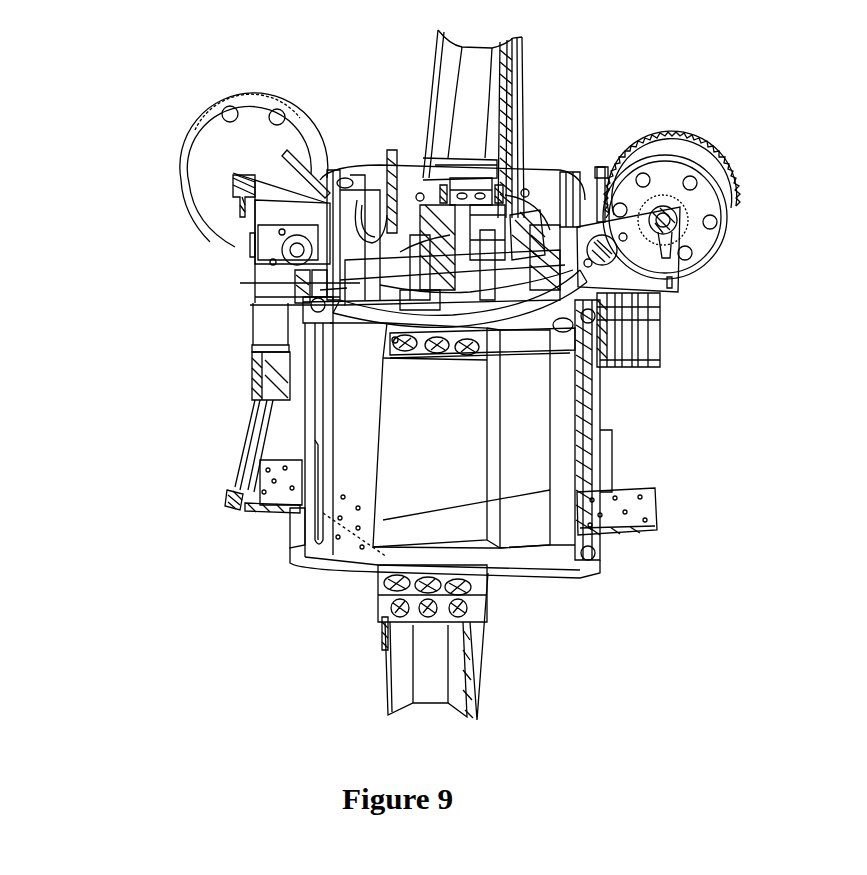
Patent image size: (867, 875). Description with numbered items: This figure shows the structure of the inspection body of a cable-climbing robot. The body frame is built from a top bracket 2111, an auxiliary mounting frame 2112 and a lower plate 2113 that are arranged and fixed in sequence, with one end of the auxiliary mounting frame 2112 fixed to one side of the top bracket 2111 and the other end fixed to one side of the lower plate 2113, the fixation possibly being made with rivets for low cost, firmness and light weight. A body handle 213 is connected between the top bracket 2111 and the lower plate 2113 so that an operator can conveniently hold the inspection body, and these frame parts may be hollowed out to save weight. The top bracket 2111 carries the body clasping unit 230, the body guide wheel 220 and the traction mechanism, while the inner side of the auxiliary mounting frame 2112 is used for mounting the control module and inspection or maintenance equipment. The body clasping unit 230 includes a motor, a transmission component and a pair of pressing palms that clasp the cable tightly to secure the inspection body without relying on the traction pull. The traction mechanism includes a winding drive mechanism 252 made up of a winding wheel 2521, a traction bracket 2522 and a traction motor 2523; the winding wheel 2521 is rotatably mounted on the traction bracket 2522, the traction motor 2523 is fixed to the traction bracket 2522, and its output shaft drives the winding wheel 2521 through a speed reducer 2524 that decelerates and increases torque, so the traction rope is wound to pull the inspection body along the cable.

The body guide wheel 220 is at (495, 107).
The winding wheel 2521 is at (213, 118).
The winding drive mechanism 252 is at (97, 176).
The traction bracket 2522 is at (237, 228).
The speed reducer 2524 is at (260, 254).
The traction motor 2523 is at (262, 294).
The body clasping unit 230 is at (347, 290).
The top bracket 2111 is at (580, 320).
The auxiliary mounting frame 2112 is at (533, 418).
The body handle 213 is at (567, 479).
The lower plate 2113 is at (582, 553).